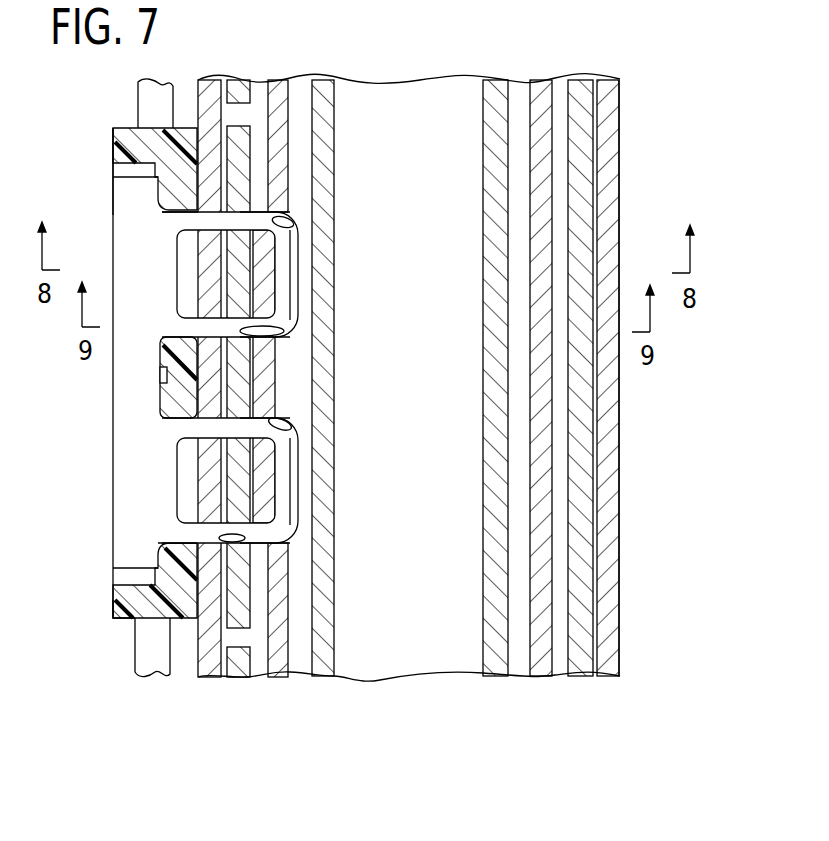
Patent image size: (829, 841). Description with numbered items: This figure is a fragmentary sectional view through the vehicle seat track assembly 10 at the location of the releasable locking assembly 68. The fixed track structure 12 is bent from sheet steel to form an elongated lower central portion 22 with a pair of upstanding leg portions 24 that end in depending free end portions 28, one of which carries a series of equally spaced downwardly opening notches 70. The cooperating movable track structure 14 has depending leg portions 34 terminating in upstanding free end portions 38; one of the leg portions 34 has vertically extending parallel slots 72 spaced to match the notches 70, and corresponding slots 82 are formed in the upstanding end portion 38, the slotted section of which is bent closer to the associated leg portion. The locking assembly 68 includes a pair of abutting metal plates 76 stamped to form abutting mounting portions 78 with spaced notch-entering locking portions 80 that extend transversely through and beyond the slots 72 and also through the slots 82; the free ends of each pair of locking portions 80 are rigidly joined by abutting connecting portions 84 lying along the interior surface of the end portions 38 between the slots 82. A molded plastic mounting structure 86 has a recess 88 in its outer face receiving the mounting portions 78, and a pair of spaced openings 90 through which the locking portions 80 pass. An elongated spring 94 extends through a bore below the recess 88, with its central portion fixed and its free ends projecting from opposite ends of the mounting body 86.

The vehicle seat track assembly 10 is at (648, 112).
The fixed track structure 12 is at (352, 677).
The movable track structure 14 is at (622, 548).
The lower central portion 22 is at (392, 648).
The upstanding leg portions 24 is at (328, 588).
The depending free end portions 28 is at (233, 662).
The depending leg portions 34 is at (207, 488).
The upstanding free end portions 38 is at (285, 185).
The releasable locking assembly 68 is at (117, 613).
The notches 70 is at (247, 110).
The slots 72 is at (183, 334).
The abutting metal plates 76 is at (104, 430).
The mounting portions 78 is at (120, 213).
The locking portions 80 is at (220, 300).
The slots 82 is at (296, 231).
The connecting portions 84 is at (292, 268).
The mounting structure 86 is at (128, 143).
The recess 88 is at (133, 577).
The openings 90 is at (163, 215).
The spring 94 is at (145, 97).